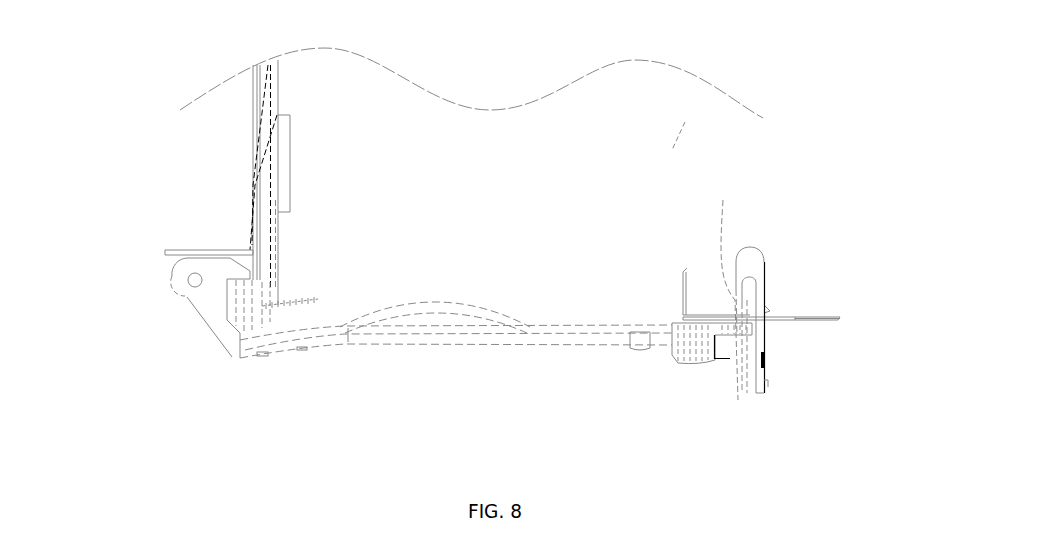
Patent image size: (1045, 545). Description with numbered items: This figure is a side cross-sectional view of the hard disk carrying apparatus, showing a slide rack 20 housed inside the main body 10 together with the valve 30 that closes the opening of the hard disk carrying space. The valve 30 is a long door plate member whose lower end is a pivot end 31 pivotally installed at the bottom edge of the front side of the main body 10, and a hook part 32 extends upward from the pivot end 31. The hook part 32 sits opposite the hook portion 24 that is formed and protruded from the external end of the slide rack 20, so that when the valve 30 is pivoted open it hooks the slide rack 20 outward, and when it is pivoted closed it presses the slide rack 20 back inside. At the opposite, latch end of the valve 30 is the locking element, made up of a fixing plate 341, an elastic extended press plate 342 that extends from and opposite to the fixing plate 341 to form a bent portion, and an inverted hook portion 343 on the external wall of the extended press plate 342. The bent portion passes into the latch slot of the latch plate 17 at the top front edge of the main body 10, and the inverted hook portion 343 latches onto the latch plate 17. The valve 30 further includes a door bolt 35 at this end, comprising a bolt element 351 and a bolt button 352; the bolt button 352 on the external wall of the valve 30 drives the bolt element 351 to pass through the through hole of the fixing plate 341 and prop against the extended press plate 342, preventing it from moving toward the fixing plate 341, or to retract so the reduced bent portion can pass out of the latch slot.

The main body 10 is at (680, 110).
The slide rack 20 is at (317, 213).
The hook portion 24 is at (238, 360).
The valve 30 is at (465, 340).
The pivot end 31 is at (237, 257).
The hook part 32 is at (240, 271).
The door bolt 35 is at (676, 352).
The bolt element 351 is at (700, 367).
The bolt button 352 is at (746, 340).
The fixing plate 341 is at (723, 262).
The extended press plate 342 is at (758, 337).
The inverted hook portion 343 is at (769, 311).
The latch plate 17 is at (835, 317).